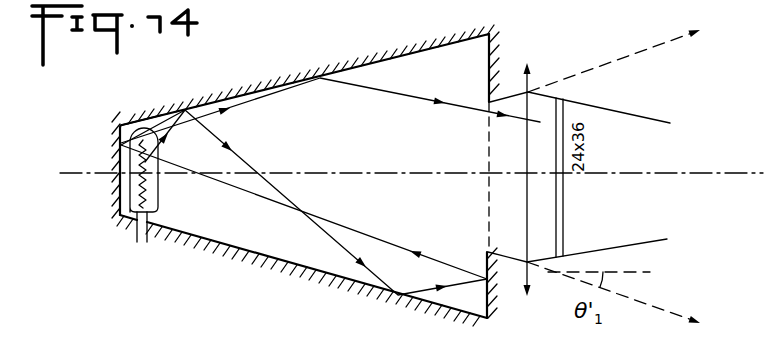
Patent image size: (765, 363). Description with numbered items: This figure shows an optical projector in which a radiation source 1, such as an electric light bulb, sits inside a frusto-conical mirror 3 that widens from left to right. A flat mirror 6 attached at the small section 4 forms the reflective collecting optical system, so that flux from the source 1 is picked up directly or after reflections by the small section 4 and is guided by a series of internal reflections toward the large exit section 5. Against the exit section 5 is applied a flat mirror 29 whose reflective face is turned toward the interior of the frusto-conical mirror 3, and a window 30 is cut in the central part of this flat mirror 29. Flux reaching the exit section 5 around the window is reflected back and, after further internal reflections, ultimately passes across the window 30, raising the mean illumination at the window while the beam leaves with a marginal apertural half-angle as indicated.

The radiation source 1 is at (156, 198).
The frusto-conical mirror 3 is at (266, 89).
The small section 4 is at (142, 124).
The large exit section 5 is at (478, 143).
The flat mirror 6 is at (119, 193).
The flat mirror 29 is at (496, 49).
The window 30 is at (488, 202).